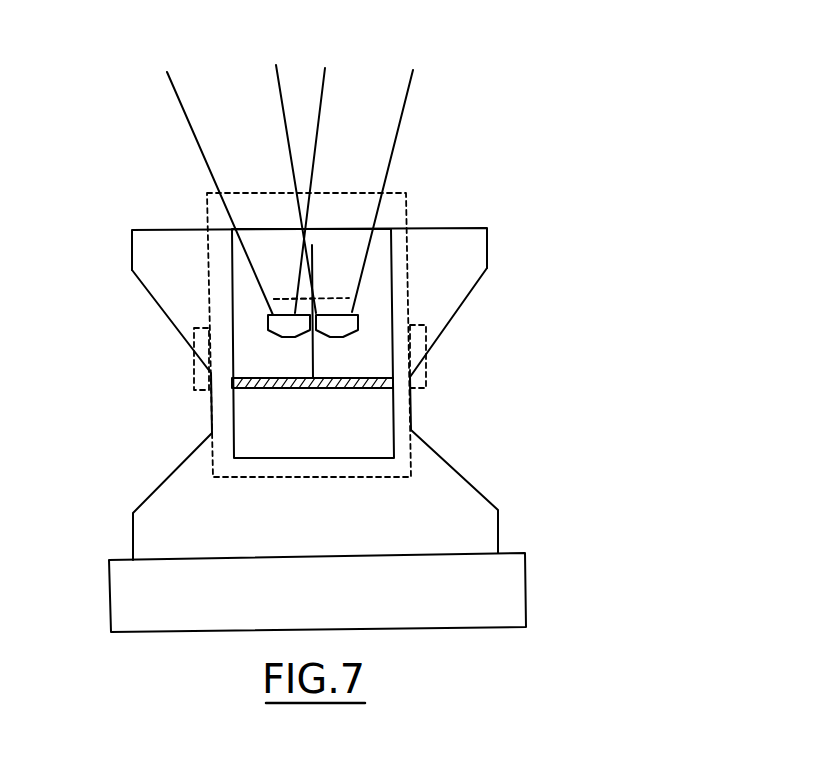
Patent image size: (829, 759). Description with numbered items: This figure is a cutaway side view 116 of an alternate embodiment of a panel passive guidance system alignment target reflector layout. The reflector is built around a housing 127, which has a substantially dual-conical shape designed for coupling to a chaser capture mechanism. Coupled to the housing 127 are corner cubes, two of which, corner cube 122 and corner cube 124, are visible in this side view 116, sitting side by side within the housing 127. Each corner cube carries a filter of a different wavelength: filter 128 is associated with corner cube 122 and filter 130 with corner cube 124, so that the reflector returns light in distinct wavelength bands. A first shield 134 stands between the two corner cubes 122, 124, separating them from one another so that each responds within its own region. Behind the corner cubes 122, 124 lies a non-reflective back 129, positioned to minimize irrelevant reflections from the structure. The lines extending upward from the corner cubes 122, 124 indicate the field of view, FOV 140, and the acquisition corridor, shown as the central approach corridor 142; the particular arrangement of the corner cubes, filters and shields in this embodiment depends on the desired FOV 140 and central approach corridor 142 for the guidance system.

The side view 116 is at (296, 412).
The corner cube 122 is at (267, 326).
The corner cube 124 is at (358, 323).
The housing 127 is at (138, 279).
The filter 128 is at (281, 298).
The non-reflective back 129 is at (365, 391).
The filter 130 is at (333, 297).
The first shield 134 is at (310, 252).
The FOV 140 is at (405, 100).
The central approach corridor 142 is at (323, 93).